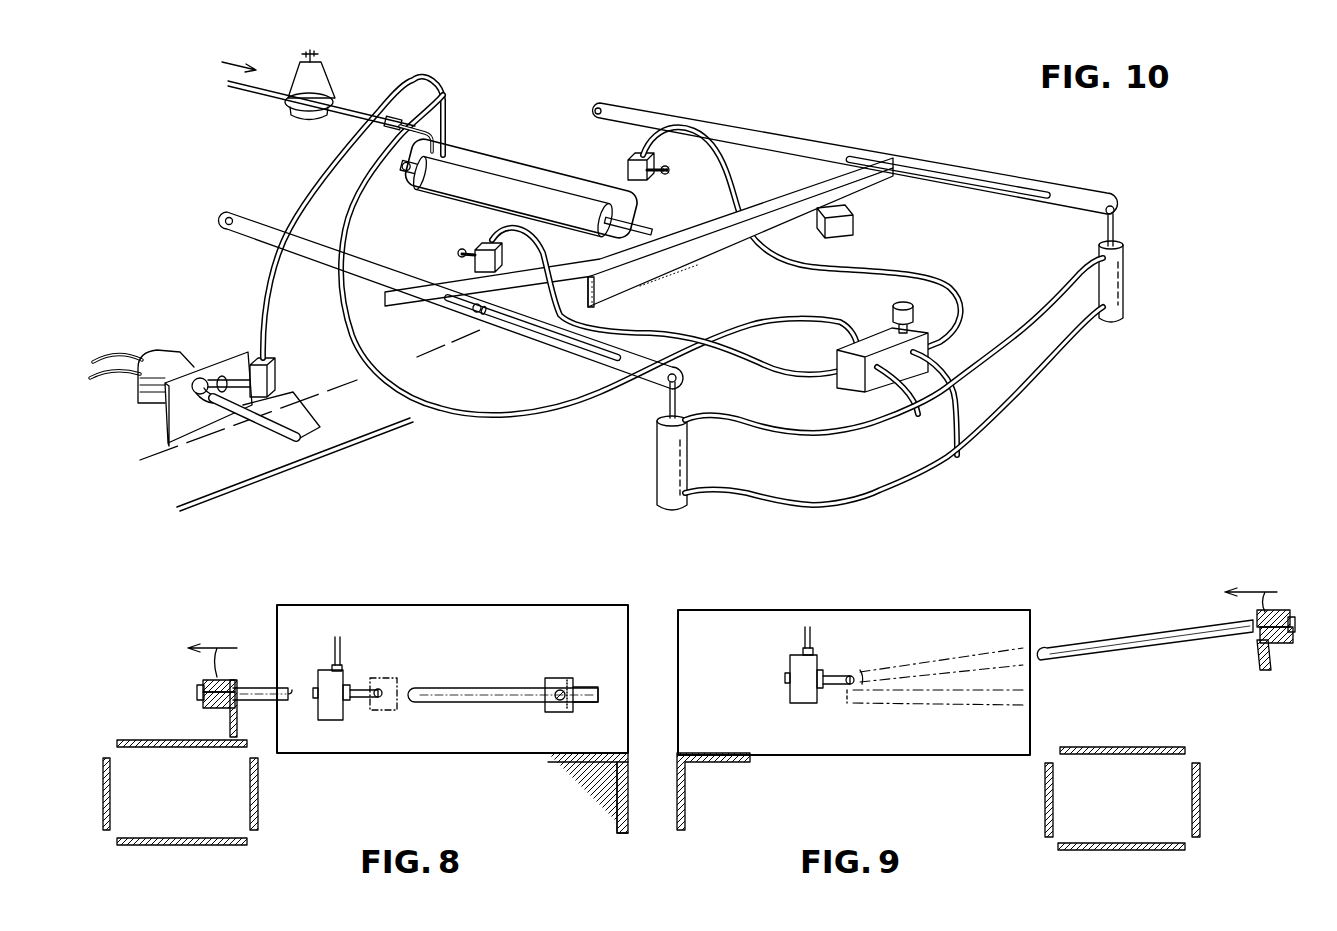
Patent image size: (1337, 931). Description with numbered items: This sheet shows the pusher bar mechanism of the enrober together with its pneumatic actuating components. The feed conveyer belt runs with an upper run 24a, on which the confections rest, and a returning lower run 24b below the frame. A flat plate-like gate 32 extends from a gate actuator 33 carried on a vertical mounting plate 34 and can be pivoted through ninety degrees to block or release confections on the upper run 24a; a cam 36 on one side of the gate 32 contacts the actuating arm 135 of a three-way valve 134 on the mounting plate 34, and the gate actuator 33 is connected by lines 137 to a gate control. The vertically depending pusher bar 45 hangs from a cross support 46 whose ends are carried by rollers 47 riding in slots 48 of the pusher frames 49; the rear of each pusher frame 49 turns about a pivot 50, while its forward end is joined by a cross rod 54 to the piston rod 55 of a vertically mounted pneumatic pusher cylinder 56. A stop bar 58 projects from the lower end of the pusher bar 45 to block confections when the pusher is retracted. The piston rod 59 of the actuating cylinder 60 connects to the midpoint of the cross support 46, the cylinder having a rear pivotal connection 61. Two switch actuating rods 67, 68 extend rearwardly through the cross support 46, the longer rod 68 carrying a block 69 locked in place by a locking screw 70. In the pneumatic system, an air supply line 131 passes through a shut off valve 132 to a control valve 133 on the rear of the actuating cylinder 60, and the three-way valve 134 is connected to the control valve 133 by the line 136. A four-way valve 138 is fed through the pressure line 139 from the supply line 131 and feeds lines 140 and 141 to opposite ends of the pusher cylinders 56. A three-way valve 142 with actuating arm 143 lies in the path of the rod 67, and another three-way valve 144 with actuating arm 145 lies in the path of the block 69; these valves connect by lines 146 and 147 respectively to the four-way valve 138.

In FIG. 10, the upper run of the feed conveyer belt 24a is at (220, 489).
In FIG. 8, the upper run of the feed conveyer belt 24a is at (161, 742).
In FIG. 9, the upper run of the feed conveyer belt 24a is at (1133, 748).
In FIG. 8, the lower run of the conveyer belt 24b is at (186, 840).
In FIG. 9, the lower run of the conveyer belt 24b is at (1105, 845).
In FIG. 10, the gate 32 is at (282, 413).
In FIG. 10, the gate actuator 33 is at (170, 352).
In FIG. 10, the mounting plate 34 is at (166, 426).
In FIG. 10, the cam 36 is at (203, 377).
In FIG. 10, the pusher bar 45 is at (702, 265).
In FIG. 8, the pusher bar 45 is at (239, 712).
In FIG. 9, the pusher bar 45 is at (1258, 659).
In FIG. 10, the cross support 46 is at (703, 231).
In FIG. 10, the rollers 47 is at (470, 316).
In FIG. 10, the slots 48 is at (590, 356).
In FIG. 10, the pusher frames 49 is at (806, 146).
In FIG. 8, the pusher frames 49 is at (210, 680).
In FIG. 9, the pusher frames 49 is at (1282, 642).
In FIG. 10, the pivot 50 is at (222, 221).
In FIG. 10, the cross rod 54 is at (668, 384).
In FIG. 10, the piston rod 55 is at (683, 403).
In FIG. 10, the pneumatic pusher cylinder 56 is at (592, 112).
In FIG. 10, the stop bar 58 is at (852, 230).
In FIG. 10, the piston rod 59 is at (636, 230).
In FIG. 10, the actuating cylinder 60 is at (532, 196).
In FIG. 10, the pivotal connection 61 is at (402, 174).
In FIG. 9, the switch actuating rod 67 is at (1115, 646).
In FIG. 8, the switch actuating rod 68 is at (262, 687).
In FIG. 8, the block 69 is at (556, 681).
In FIG. 8, the locking screw 70 is at (576, 694).
In FIG. 10, the air supply line 131 is at (262, 97).
In FIG. 10, the shut off valve 132 is at (330, 77).
In FIG. 10, the control valve 133 is at (432, 130).
In FIG. 10, the three-way valve 134 is at (276, 374).
In FIG. 10, the actuating arm 135 is at (232, 376).
In FIG. 10, the line 136 is at (315, 202).
In FIG. 10, the lines 137 is at (117, 352).
In FIG. 10, the four-way valve 138 is at (876, 346).
In FIG. 10, the pressure line 139 is at (532, 412).
In FIG. 10, the line 140 is at (882, 434).
In FIG. 10, the line 141 is at (994, 428).
In FIG. 10, the three-way valve 142 is at (628, 166).
In FIG. 9, the three-way valve 142 is at (792, 668).
In FIG. 10, the actuating arm 143 is at (669, 172).
In FIG. 9, the actuating arm 143 is at (836, 682).
In FIG. 10, the three-way valve 144 is at (475, 262).
In FIG. 8, the three-way valve 144 is at (325, 680).
In FIG. 10, the actuating arm 145 is at (460, 249).
In FIG. 8, the actuating arm 145 is at (368, 690).
In FIG. 10, the line 146 is at (746, 203).
In FIG. 10, the line 147 is at (645, 347).